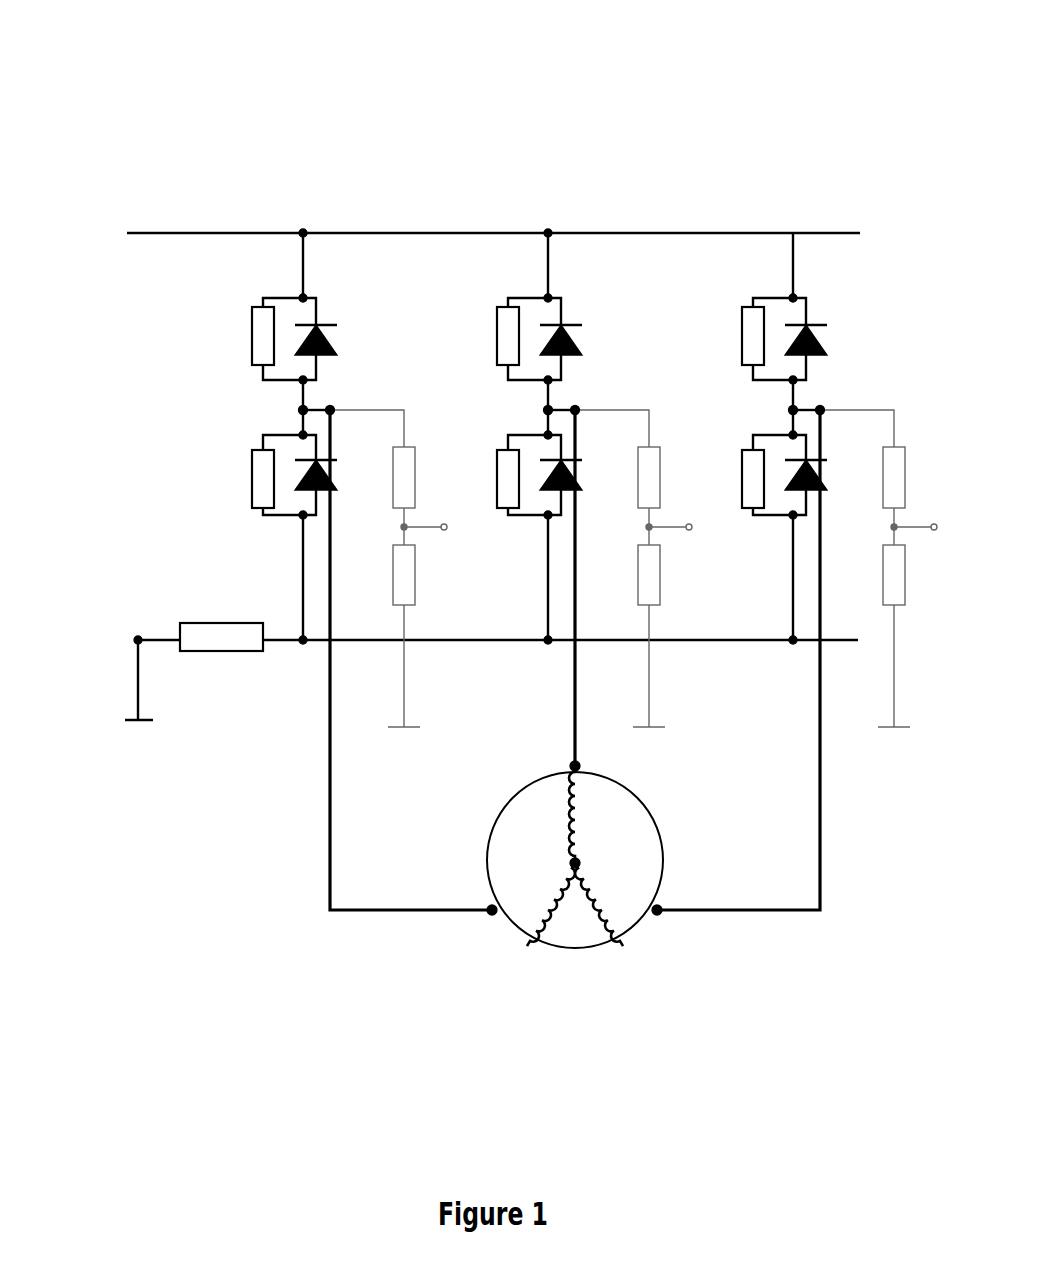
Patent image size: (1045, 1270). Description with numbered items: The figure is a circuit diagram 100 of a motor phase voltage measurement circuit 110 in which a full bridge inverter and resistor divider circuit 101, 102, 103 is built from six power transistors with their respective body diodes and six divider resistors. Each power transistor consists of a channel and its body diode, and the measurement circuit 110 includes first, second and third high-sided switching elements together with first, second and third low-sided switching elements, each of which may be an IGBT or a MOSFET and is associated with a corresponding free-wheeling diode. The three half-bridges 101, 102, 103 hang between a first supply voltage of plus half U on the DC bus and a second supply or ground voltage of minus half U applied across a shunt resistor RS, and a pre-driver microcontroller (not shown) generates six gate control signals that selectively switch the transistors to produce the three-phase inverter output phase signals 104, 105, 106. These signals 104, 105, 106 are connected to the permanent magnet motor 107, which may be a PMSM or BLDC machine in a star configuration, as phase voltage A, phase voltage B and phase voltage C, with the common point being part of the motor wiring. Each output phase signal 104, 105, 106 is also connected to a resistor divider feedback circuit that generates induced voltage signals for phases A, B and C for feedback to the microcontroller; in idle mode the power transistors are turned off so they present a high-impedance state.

The circuit diagram 100 is at (110, 52).
The first inverter leg of the full bridge inverter and resistor divider circuit 101 is at (202, 292).
The second inverter leg of the full bridge inverter and resistor divider circuit 102 is at (457, 292).
The third inverter leg of the full bridge inverter and resistor divider circuit 103 is at (717, 292).
The inverter output phase signal (phase voltage A) 104 is at (299, 410).
The inverter output phase signal (phase voltage B) 105 is at (544, 410).
The inverter output phase signal (phase voltage C) 106 is at (789, 410).
The multi-phase AC permanent magnet motor 107 is at (490, 842).
The motor phase voltage measurement circuit 110 is at (98, 455).